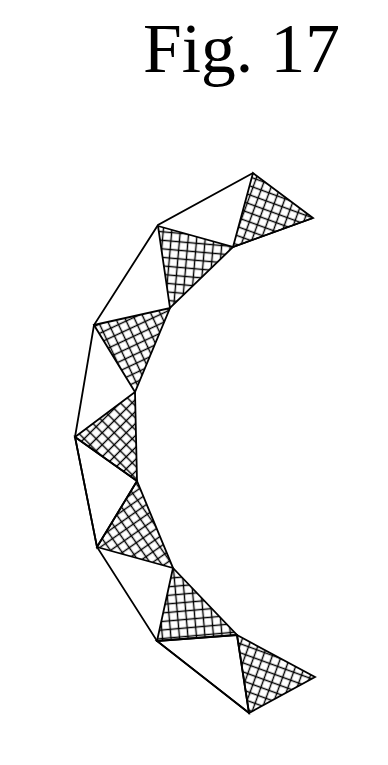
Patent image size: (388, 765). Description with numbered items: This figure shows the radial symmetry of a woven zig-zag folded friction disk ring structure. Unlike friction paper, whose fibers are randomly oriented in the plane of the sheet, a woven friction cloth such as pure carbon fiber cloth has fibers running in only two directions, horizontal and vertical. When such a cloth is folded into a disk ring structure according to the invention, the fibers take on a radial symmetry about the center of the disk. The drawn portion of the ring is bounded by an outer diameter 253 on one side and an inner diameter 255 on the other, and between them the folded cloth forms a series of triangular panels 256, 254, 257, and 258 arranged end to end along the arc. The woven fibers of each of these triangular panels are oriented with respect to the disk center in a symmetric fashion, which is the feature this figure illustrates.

The outer diameter 253 is at (125, 276).
The triangular panel 254 is at (106, 485).
The inner diameter 255 is at (203, 275).
The triangular panel 256 is at (123, 433).
The triangular panel 257 is at (195, 613).
The triangular panel 258 is at (215, 668).